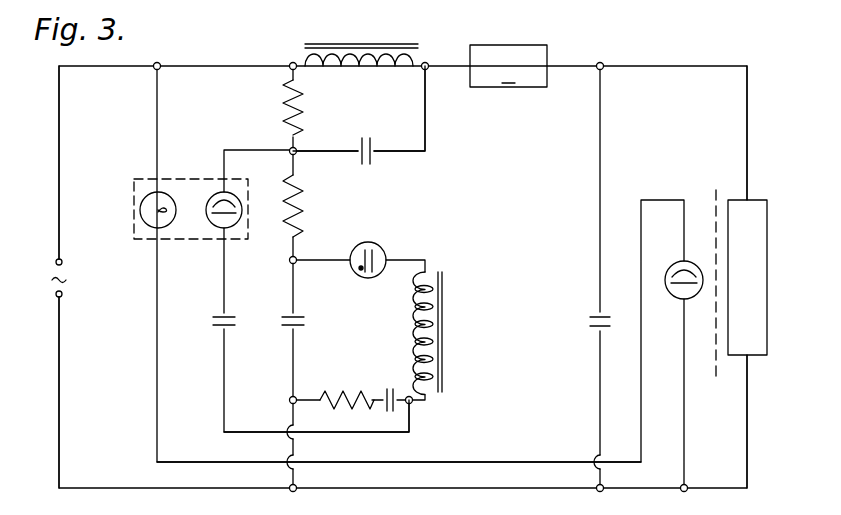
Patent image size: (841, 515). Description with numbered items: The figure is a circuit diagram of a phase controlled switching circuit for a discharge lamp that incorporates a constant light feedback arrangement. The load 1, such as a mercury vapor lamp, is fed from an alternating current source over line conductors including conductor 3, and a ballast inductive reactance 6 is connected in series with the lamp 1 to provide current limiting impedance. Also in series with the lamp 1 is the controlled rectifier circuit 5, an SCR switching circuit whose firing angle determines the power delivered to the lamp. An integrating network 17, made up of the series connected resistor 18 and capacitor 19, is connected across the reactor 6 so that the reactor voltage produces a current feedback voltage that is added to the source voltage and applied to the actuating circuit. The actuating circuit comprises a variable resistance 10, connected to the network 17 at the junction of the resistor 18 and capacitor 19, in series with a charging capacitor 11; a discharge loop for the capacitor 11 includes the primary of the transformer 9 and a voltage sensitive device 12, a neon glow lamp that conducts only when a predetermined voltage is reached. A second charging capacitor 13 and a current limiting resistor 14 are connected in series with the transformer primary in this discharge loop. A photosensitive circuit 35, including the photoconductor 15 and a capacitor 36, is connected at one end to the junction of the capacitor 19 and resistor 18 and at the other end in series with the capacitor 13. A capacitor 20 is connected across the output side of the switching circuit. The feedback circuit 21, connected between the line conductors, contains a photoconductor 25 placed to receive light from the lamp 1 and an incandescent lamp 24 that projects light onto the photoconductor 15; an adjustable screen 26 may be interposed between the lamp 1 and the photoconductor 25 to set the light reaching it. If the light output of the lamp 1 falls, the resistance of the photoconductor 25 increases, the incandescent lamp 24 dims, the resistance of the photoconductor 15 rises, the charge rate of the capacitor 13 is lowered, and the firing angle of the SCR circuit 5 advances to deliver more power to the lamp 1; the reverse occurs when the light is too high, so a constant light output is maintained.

The load 1 is at (776, 269).
The conductor 3 is at (112, 70).
The controlled rectifier circuit 5 is at (508, 66).
The ballast inductive reactance 6 is at (415, 44).
The transformer 9 is at (448, 327).
The variable resistance 10 is at (305, 218).
The charging capacitor 11 is at (287, 330).
The voltage sensitive device 12 is at (360, 276).
The second charging capacitor 13 is at (390, 388).
The current limiting resistor 14 is at (337, 390).
The photoconductor 15 is at (218, 192).
The integrating network 17 is at (432, 111).
The resistor 18 is at (305, 116).
The capacitor 19 is at (372, 155).
The capacitor 20 is at (588, 320).
The feedback circuit 21 is at (455, 463).
The incandescent lamp 24 is at (140, 214).
The photoconductor 25 is at (677, 262).
The adjustable screen 26 is at (712, 197).
The photosensitive circuit 35 is at (223, 416).
The capacitor 36 is at (207, 325).